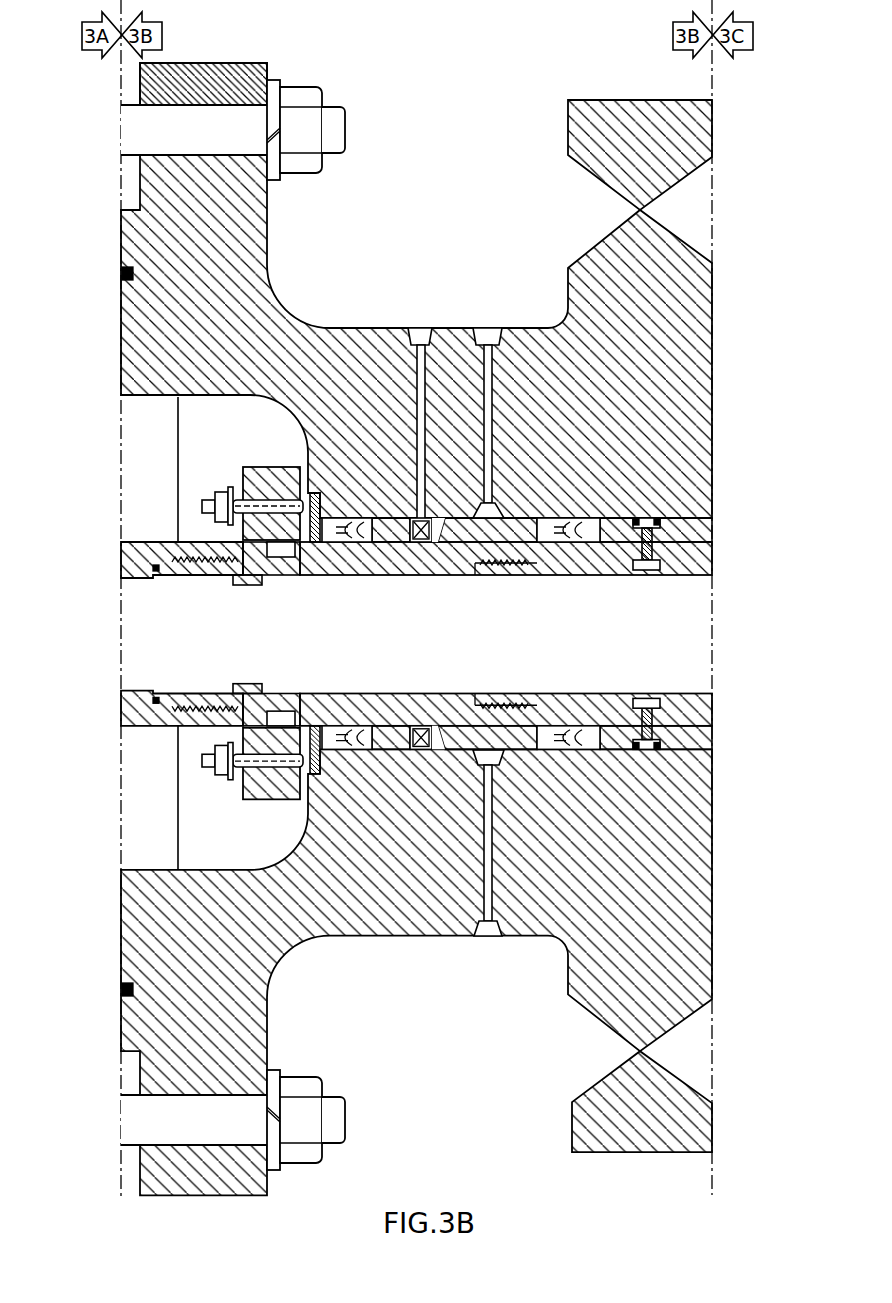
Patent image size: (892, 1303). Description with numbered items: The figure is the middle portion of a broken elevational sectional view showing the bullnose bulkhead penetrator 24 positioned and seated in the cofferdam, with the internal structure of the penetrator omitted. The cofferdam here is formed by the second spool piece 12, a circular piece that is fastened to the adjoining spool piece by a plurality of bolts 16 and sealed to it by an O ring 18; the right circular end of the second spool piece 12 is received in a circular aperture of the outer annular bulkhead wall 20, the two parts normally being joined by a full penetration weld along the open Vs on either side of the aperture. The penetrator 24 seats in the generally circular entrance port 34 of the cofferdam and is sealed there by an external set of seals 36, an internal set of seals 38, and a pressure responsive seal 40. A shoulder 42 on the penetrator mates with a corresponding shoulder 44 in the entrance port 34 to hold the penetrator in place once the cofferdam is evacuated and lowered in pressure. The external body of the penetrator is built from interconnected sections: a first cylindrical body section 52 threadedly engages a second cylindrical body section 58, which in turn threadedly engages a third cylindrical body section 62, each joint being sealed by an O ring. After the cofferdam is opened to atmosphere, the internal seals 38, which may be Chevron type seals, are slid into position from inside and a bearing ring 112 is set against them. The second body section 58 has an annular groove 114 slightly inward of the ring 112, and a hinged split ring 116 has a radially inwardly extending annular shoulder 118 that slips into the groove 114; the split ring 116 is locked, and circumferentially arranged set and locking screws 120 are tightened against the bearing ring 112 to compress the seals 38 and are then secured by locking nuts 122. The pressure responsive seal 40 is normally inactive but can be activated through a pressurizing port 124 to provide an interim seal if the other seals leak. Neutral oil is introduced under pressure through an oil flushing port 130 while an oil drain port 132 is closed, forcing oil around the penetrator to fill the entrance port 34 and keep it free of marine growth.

The second spool piece 12 is at (262, 215).
The bolts 16 is at (347, 131).
The O ring 18 is at (122, 274).
The outer annular bulkhead wall 20 is at (568, 131).
The bullnose bulkhead penetrator 24 is at (160, 527).
The entrance port 34 is at (647, 522).
The external set of seals 36 is at (572, 542).
The internal set of seals 38 is at (352, 544).
The pressure responsive seal 40 is at (418, 545).
The shoulder 42 is at (446, 530).
The mating shoulder 44 is at (419, 542).
The first cylindrical body section 52 is at (135, 545).
The second cylindrical body section 58 is at (310, 577).
The third cylindrical body section 62 is at (672, 572).
The bearing ring 112 is at (307, 455).
The annular groove 114 is at (258, 553).
The hinged split ring 116 is at (243, 535).
The annular shoulder 118 is at (287, 575).
The set and locking screws 120 is at (205, 498).
The locking nuts 122 is at (226, 489).
The pressurizing port 124 is at (452, 300).
The oil flushing port 130 is at (489, 328).
The oil drain port 132 is at (491, 937).